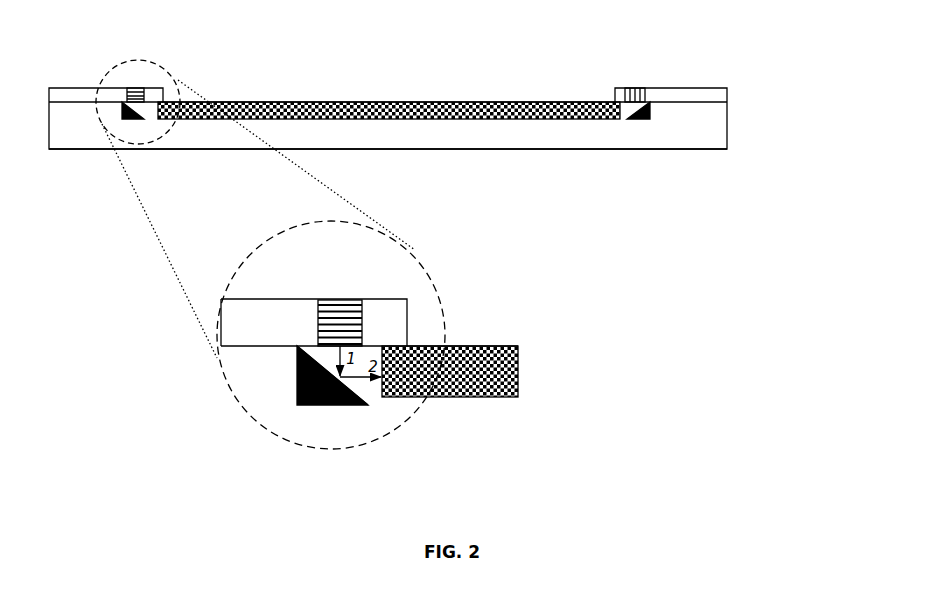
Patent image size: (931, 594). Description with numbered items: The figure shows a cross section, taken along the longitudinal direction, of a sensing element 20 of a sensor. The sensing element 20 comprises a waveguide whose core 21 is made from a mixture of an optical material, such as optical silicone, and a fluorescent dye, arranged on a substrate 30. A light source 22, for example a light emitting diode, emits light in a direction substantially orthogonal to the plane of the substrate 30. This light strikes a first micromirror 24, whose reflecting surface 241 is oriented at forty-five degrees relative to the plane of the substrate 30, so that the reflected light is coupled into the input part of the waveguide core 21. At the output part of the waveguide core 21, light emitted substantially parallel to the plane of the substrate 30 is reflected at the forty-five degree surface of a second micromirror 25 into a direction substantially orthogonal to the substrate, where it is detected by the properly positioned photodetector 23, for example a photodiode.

The sensing element 20 is at (742, 76).
The waveguide core 21 is at (463, 109).
The light source 22 is at (134, 85).
The photodetector 23 is at (640, 85).
The first micromirror 24 is at (133, 122).
The reflecting surface 241 is at (369, 395).
The second micromirror 25 is at (649, 122).
The substrate 30 is at (359, 141).